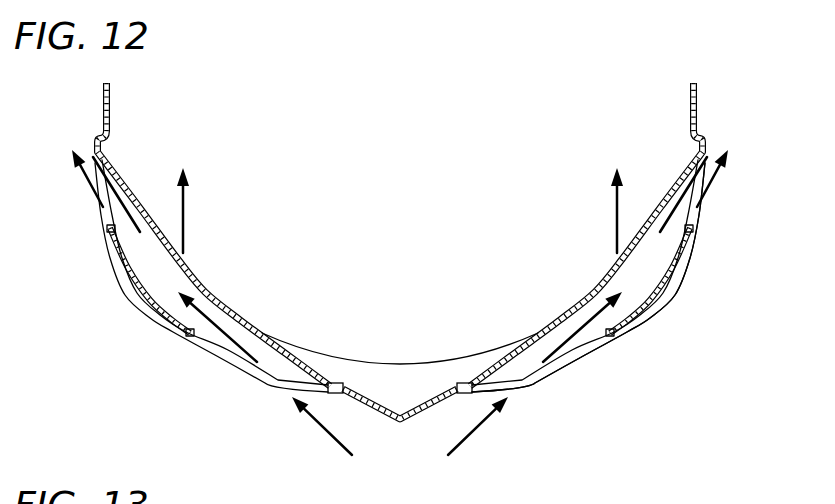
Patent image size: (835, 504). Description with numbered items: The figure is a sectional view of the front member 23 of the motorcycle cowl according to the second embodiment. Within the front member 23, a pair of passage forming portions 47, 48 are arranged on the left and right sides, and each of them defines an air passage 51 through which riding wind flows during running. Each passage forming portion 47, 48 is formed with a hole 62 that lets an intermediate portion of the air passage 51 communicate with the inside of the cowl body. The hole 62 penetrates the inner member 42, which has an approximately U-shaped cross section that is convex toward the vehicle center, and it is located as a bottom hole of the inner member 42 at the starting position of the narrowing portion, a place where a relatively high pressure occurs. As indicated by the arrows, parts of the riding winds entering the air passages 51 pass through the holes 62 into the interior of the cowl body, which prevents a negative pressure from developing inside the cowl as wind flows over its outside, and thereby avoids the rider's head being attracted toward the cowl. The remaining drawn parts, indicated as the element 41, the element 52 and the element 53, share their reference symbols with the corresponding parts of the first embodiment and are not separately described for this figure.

The front member 23 is at (407, 434).
The lamp body 41 is at (694, 246).
The inner member 42 is at (121, 176).
The passage forming portion 47 is at (540, 300).
The passage forming portion 48 is at (262, 292).
The air passage 51 is at (162, 298).
The flange portion 52 is at (264, 386).
The outer cover 53 is at (98, 197).
The hole 62 is at (195, 268).